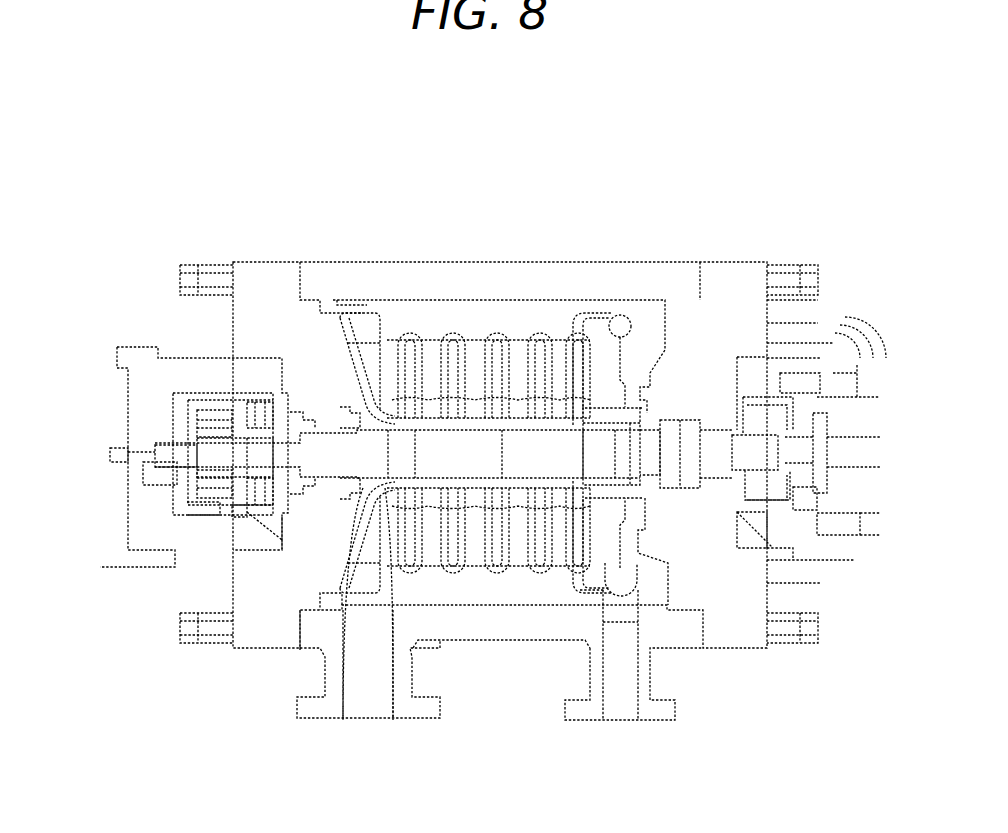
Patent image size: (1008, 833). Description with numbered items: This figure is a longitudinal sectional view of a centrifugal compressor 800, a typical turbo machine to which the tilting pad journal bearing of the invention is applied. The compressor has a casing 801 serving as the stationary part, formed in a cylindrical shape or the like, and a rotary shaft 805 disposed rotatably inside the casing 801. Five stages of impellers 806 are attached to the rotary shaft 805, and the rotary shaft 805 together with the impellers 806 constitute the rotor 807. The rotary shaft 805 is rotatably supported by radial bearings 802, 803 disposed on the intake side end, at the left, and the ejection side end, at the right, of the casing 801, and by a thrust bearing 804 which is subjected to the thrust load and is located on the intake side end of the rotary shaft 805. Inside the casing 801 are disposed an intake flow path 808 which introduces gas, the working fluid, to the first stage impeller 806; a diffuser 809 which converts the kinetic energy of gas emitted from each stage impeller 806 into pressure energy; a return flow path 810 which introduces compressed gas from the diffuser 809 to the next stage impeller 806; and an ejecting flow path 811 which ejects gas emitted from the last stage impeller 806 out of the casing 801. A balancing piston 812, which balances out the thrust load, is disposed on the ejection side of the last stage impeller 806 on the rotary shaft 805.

The centrifugal compressor 800 is at (670, 197).
The casing 801 is at (432, 272).
The radial bearing 802 is at (253, 490).
The radial bearing 803 is at (767, 422).
The thrust bearing 804 is at (213, 487).
The rotary shaft 805 is at (753, 458).
The impellers 806 is at (402, 407).
The rotor 807 is at (475, 470).
The intake flow path 808 is at (366, 707).
The diffuser 809 is at (570, 372).
The return flow path 810 is at (510, 362).
The ejecting flow path 811 is at (620, 712).
The balancing piston 812 is at (613, 422).